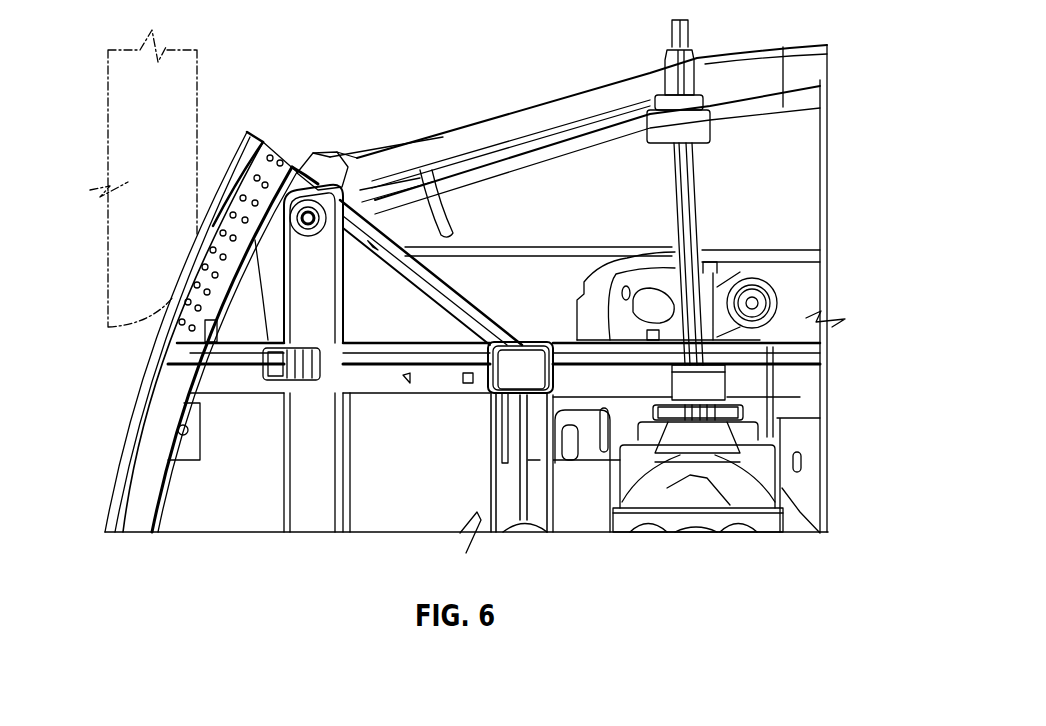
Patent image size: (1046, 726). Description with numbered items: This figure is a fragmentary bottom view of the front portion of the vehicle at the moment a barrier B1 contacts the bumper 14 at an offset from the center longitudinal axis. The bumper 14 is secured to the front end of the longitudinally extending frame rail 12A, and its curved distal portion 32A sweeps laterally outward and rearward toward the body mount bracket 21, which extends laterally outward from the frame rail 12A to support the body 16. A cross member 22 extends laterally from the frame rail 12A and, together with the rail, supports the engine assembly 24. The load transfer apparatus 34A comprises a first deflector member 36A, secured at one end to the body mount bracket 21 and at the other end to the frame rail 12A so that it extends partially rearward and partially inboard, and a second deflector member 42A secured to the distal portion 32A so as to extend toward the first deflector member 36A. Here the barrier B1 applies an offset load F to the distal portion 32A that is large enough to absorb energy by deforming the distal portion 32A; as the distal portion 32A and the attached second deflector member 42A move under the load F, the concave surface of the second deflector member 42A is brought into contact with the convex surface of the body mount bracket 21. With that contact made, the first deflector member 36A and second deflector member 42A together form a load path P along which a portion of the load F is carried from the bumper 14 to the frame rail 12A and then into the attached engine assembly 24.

The barrier B1 is at (197, 63).
The bumper 14 is at (150, 470).
The distal portion 32A is at (233, 148).
The offset load F is at (250, 178).
The second deflector member 42A is at (299, 176).
The body mount bracket 21 is at (322, 295).
The first deflector member 36A is at (446, 296).
The load transfer apparatus 34A is at (452, 270).
The body 16 is at (573, 132).
The frame rail 12A is at (437, 385).
The load path P is at (517, 347).
The cross member 22 is at (540, 460).
The engine assembly 24 is at (663, 488).